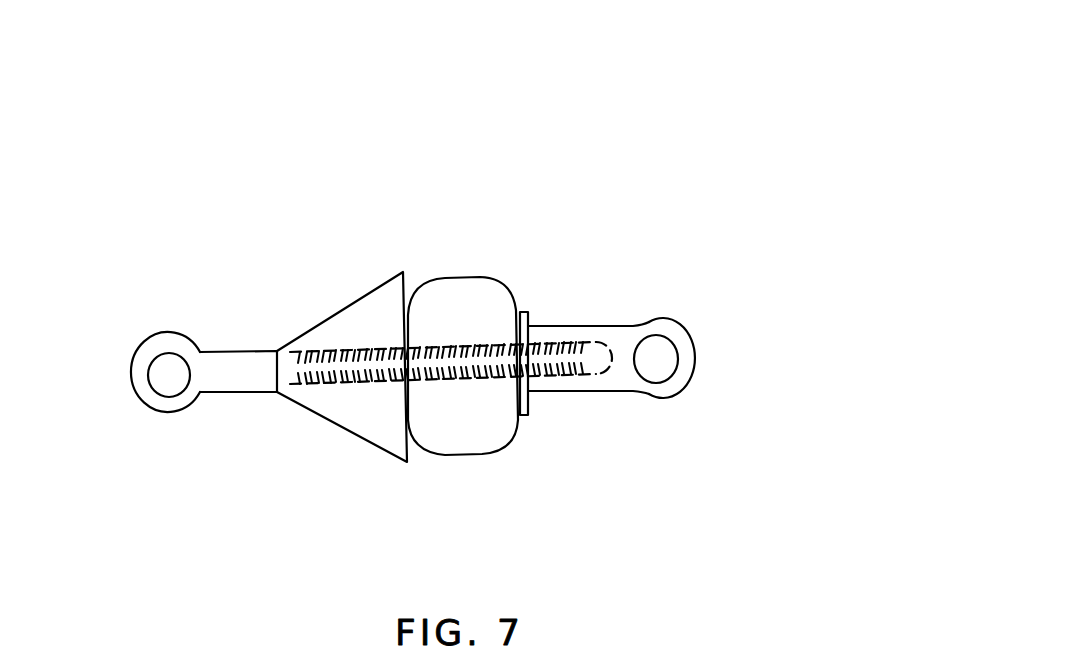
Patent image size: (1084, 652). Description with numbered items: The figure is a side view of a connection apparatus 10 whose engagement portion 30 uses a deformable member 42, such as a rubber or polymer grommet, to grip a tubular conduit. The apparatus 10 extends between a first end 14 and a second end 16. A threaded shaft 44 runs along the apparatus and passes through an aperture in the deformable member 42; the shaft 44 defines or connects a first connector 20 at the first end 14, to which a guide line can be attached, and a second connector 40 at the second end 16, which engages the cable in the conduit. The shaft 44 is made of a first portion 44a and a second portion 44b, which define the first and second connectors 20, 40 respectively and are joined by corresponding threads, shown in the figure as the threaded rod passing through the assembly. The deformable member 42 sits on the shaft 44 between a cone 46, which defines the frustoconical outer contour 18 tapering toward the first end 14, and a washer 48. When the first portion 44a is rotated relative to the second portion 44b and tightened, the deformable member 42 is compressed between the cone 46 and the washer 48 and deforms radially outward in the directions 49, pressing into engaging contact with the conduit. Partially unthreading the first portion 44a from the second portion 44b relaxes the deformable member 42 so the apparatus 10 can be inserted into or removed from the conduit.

The connection apparatus 10 is at (677, 121).
The first end 14 is at (133, 298).
The second end 16 is at (710, 443).
The frustoconical outer contour 18 is at (333, 423).
The first connector 20 is at (143, 409).
The engagement portion 30 is at (528, 490).
The second connector 40 is at (688, 327).
The deformable member 42 is at (487, 278).
The threaded shaft 44 is at (258, 397).
The first portion 44a is at (416, 380).
The second portion 44b is at (582, 392).
The cone 46 is at (323, 317).
The washer 48 is at (527, 312).
The directions 49 is at (462, 250).